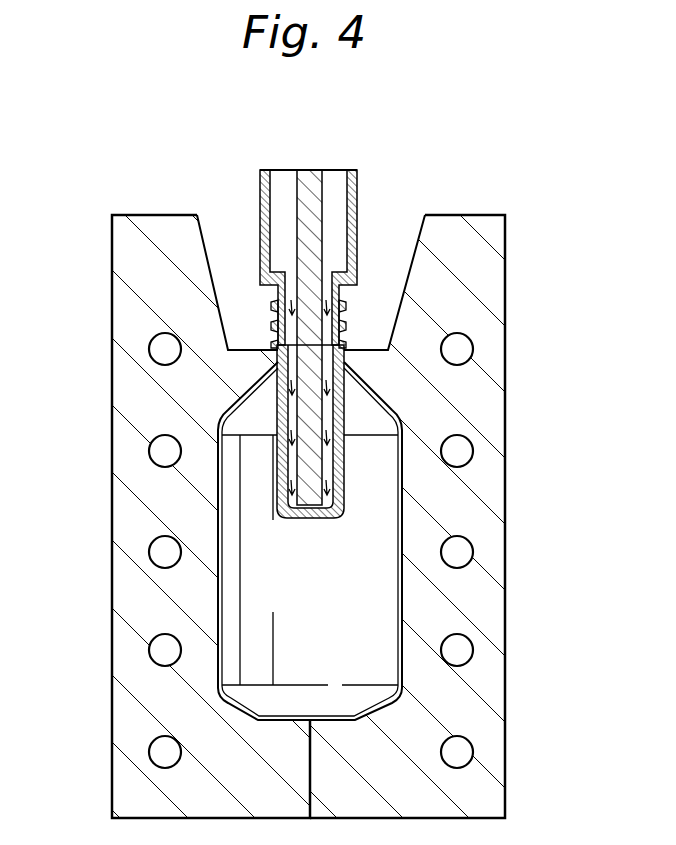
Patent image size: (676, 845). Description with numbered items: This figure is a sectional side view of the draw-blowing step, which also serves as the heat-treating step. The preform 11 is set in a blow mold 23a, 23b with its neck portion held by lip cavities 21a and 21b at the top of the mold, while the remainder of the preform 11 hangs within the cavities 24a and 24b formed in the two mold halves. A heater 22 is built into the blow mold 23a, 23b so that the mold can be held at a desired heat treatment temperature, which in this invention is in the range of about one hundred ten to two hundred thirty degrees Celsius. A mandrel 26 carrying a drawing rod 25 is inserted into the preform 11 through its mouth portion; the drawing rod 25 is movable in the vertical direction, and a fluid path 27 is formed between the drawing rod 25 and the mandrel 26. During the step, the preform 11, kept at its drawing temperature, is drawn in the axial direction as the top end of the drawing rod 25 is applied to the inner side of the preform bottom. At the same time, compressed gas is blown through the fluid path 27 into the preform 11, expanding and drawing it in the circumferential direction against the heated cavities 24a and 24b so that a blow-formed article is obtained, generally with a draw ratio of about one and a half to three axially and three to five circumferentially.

The preform 11 is at (293, 520).
The lip cavity 21a is at (240, 277).
The lip cavity 21b is at (403, 258).
The heater 22 is at (457, 752).
The blow mold 23a is at (133, 568).
The blow mold 23b is at (487, 558).
The cavity 24a is at (233, 606).
The cavity 24b is at (387, 603).
The drawing rod 25 is at (308, 218).
The mandrel 26 is at (357, 195).
The fluid path 27 is at (330, 298).